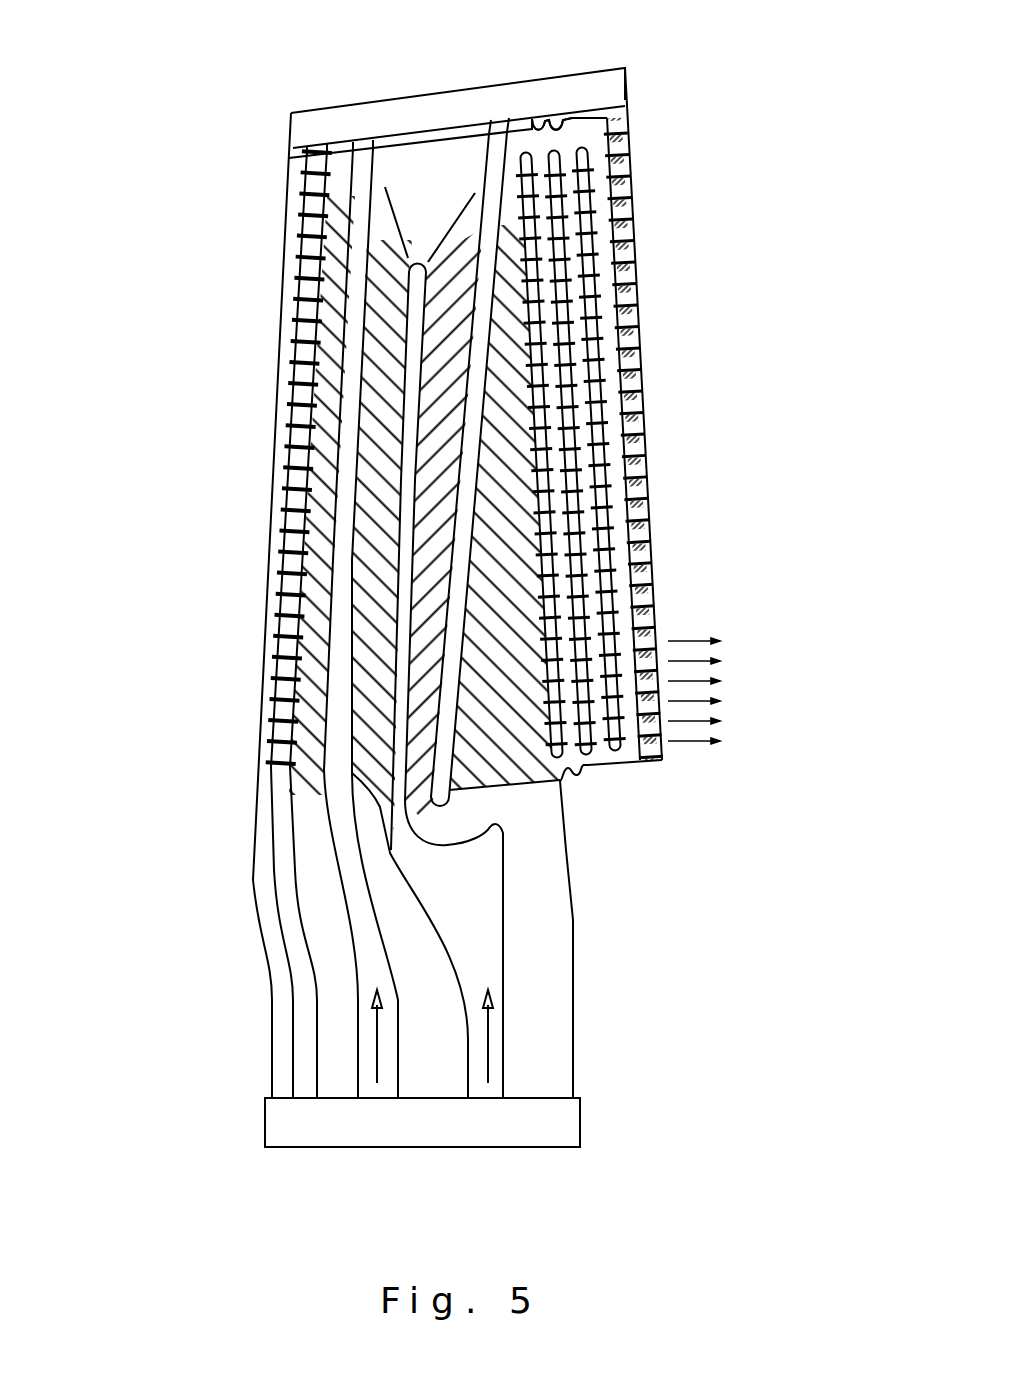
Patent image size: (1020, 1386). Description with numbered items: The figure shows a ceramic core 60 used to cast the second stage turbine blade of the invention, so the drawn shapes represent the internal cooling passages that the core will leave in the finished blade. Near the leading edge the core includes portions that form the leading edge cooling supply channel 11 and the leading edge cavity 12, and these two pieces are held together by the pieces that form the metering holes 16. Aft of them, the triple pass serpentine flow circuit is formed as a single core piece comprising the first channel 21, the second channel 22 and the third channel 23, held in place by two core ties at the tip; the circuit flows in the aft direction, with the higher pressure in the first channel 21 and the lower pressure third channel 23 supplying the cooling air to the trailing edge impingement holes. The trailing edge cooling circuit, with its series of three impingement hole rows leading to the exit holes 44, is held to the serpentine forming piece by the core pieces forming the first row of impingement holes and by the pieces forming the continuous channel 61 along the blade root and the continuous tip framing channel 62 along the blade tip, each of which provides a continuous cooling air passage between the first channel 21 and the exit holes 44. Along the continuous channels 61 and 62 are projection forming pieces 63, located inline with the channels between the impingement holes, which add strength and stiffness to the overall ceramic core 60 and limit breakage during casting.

The ceramic core 60 is at (198, 124).
The continuous tip framing channel 62 is at (557, 137).
The projection forming pieces 63 is at (567, 128).
The metering hole 16 is at (298, 248).
The leading edge cavity 12 is at (265, 606).
The leading edge cooling supply channel 11 is at (310, 738).
The first channel 21 is at (371, 481).
The second channel 22 is at (447, 427).
The third channel 23 is at (513, 705).
The exit holes 44 is at (631, 371).
The continuous channel 61 is at (588, 765).